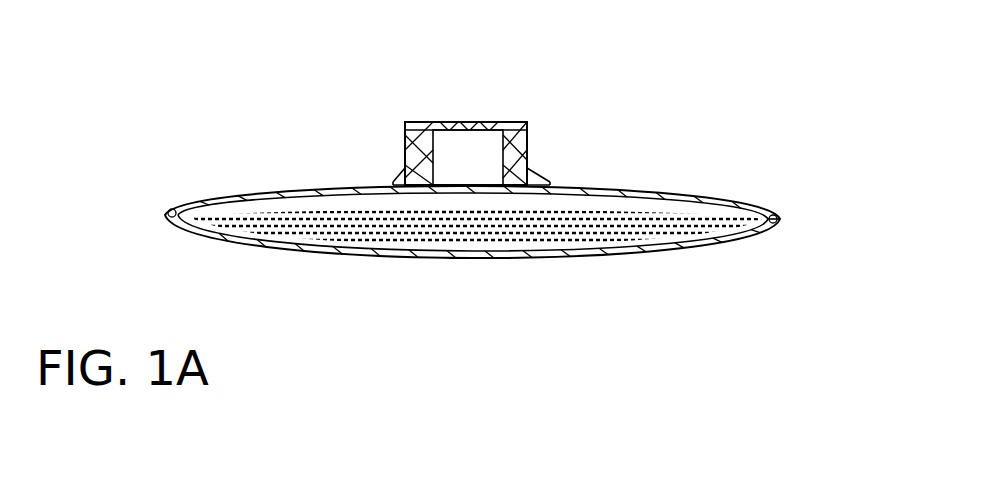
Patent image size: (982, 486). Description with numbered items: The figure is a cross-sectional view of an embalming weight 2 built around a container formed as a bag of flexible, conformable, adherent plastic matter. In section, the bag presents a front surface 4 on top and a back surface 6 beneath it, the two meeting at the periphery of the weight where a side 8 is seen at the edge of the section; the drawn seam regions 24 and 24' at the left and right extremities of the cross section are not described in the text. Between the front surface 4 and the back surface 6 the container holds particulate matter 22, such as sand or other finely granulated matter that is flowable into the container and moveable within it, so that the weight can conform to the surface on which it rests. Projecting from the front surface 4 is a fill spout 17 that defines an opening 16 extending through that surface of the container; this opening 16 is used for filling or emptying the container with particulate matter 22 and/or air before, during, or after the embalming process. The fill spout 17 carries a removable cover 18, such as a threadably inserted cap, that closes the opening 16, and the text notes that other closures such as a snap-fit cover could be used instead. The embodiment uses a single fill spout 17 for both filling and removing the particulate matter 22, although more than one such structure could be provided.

The embalming weight 2 is at (708, 109).
The front surface 4 is at (307, 181).
The back surface 6 is at (412, 258).
The side 8 is at (773, 210).
The opening 16 is at (462, 152).
The fill spout 17 is at (530, 153).
The removable cover 18 is at (493, 122).
The particulate matter 22 is at (520, 257).
The edge seal 24 is at (118, 189).
The edge seal 24' is at (820, 254).